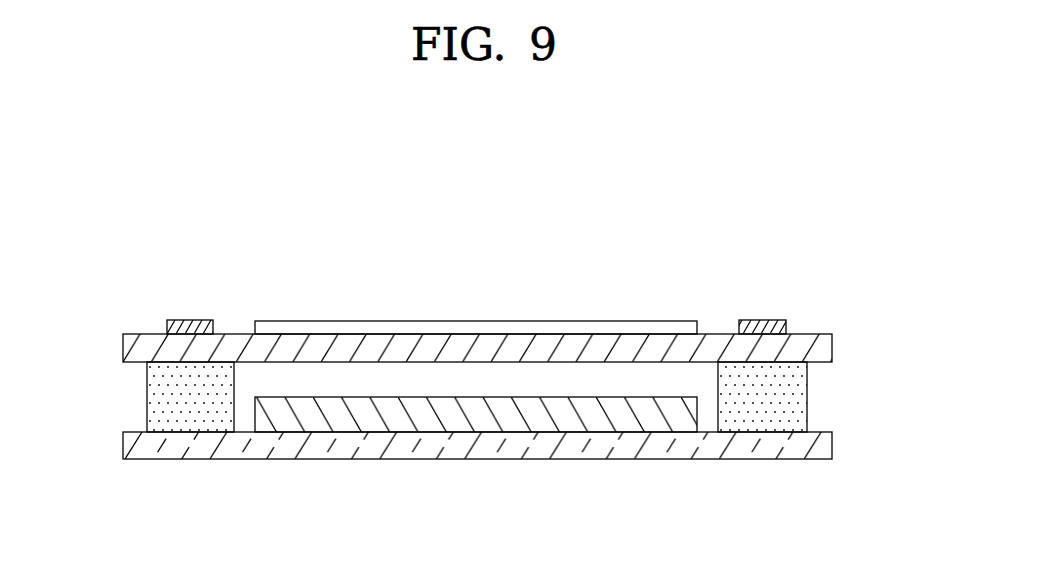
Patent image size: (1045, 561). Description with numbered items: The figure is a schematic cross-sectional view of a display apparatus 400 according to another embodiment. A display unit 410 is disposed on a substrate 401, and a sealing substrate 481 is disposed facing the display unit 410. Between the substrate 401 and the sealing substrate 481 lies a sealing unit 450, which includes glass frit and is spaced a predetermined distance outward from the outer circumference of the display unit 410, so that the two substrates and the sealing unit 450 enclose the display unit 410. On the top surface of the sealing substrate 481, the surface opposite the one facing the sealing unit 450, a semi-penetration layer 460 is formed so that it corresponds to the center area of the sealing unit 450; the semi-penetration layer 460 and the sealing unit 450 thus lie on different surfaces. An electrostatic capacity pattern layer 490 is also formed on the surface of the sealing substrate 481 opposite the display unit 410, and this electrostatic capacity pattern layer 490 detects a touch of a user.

The display apparatus 400 is at (777, 282).
The substrate 401 is at (818, 443).
The display unit 410 is at (473, 415).
The sealing unit 450 is at (160, 393).
The semi-penetration layer 460 is at (191, 320).
The sealing substrate 481 is at (818, 344).
The electrostatic capacity pattern layer 490 is at (477, 328).